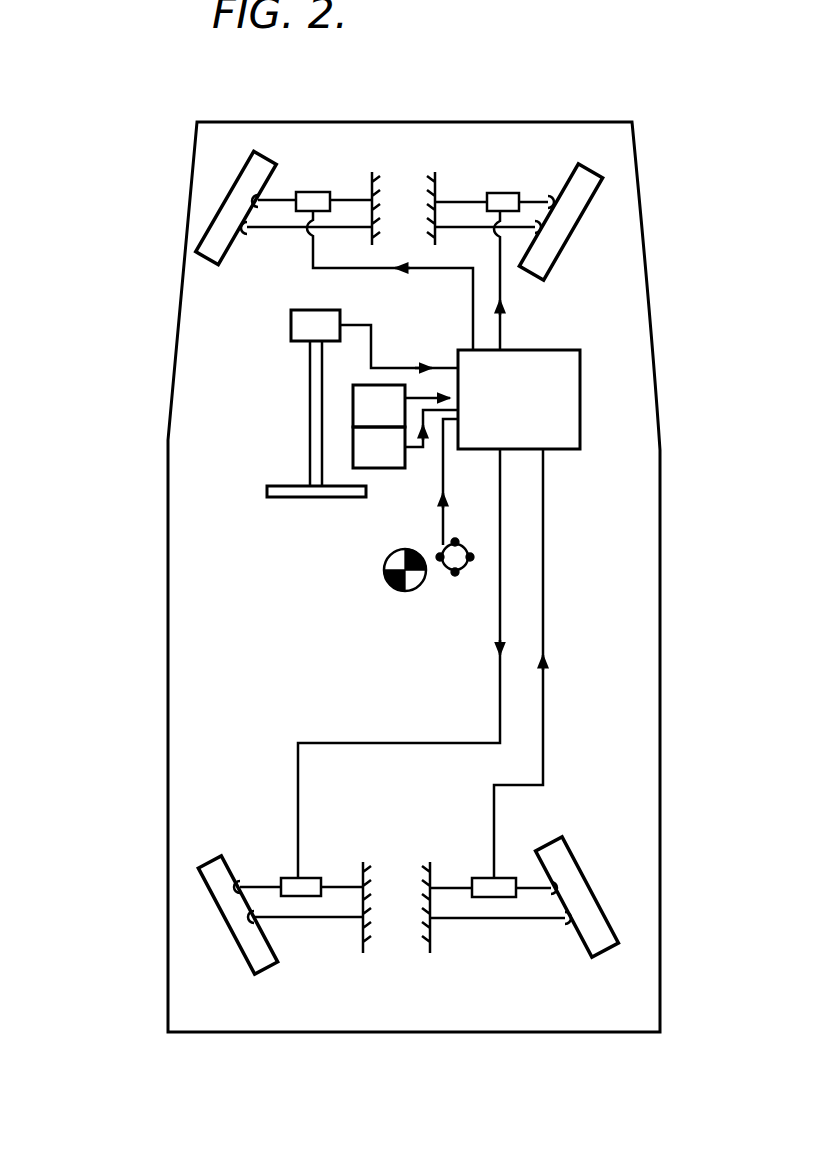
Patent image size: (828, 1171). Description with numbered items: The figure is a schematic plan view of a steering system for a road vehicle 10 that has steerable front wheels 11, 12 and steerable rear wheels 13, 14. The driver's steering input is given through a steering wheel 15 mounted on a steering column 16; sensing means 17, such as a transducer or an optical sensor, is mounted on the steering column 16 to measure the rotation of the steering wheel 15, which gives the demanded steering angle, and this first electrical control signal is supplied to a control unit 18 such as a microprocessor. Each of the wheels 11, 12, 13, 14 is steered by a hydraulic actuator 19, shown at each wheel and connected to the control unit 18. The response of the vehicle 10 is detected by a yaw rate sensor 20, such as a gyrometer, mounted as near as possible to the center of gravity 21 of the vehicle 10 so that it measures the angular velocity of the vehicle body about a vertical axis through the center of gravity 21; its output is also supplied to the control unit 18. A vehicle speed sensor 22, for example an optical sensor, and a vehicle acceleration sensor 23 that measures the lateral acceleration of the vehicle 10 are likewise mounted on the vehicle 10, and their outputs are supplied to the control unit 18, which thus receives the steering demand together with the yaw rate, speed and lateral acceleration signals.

The vehicle 10 is at (160, 593).
The steerable front wheel 11 is at (244, 184).
The steerable front wheel 12 is at (590, 187).
The steerable rear wheel 13 is at (226, 914).
The steerable rear wheel 14 is at (600, 935).
The steering wheel 15 is at (267, 490).
The steering column 16 is at (312, 362).
The sensing means 17 is at (300, 322).
The control unit 18 is at (528, 413).
The hydraulic actuator 19 is at (313, 194).
The yaw rate sensor 20 is at (467, 548).
The center of gravity 21 is at (384, 572).
The vehicle speed sensor 22 is at (367, 405).
The vehicle acceleration sensor 23 is at (367, 445).